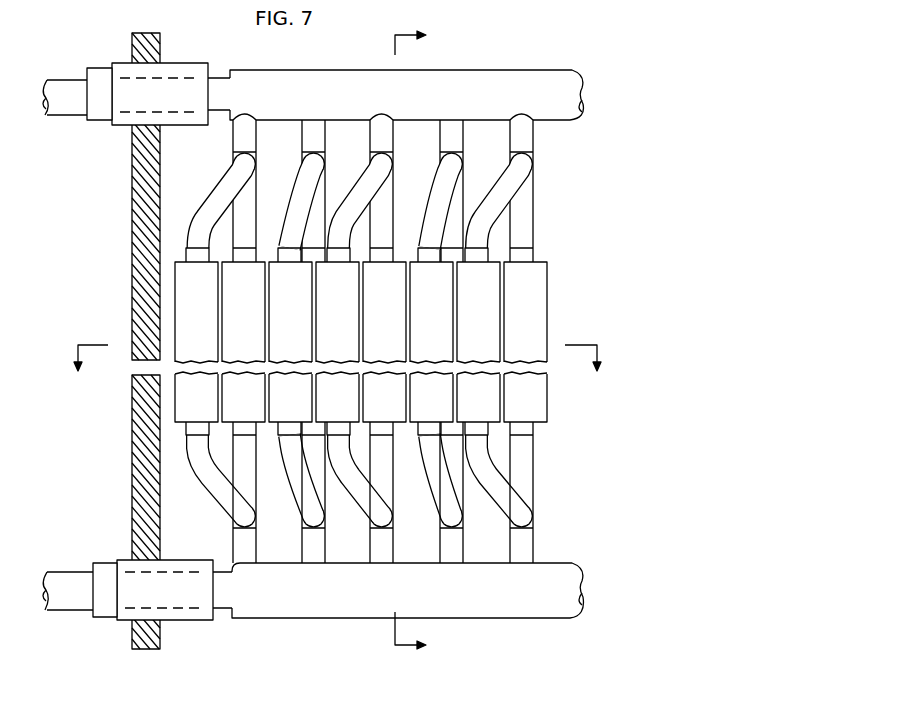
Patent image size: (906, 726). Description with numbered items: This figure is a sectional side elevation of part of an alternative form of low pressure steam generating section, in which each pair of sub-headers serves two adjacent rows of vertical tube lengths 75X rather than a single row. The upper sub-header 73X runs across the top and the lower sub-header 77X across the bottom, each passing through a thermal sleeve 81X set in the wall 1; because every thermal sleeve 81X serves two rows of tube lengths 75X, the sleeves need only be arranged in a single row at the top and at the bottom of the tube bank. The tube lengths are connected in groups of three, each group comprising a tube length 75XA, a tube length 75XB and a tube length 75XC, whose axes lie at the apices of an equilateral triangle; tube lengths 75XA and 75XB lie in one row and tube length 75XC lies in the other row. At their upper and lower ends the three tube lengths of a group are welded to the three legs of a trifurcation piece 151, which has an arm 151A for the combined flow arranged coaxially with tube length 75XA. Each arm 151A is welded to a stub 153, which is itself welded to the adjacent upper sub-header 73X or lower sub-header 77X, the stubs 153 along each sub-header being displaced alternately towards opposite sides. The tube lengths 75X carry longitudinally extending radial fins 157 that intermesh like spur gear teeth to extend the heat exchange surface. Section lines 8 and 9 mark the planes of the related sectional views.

The wall 1 is at (132, 253).
The thermal sleeve 81X is at (175, 72).
The upper sub-header 73X is at (291, 80).
The lower sub-header 77X is at (348, 593).
The stub 153 is at (521, 576).
The trifurcation piece 151 is at (366, 197).
The arm of trifurcation piece 151A is at (233, 158).
The tube length 75XA is at (563, 248).
The tube length 75XB is at (337, 312).
The tube length 75XC is at (361, 312).
The vertical tube length 75X is at (487, 383).
The radial fin 157 is at (497, 425).
The section line 8- 8 is at (417, 341).
The section line 9- 9 is at (338, 369).